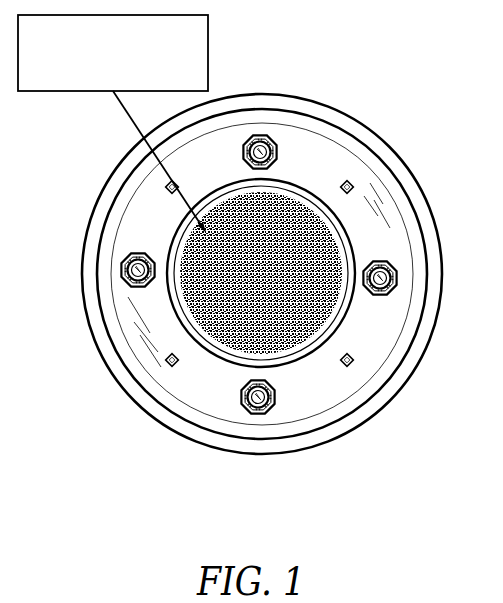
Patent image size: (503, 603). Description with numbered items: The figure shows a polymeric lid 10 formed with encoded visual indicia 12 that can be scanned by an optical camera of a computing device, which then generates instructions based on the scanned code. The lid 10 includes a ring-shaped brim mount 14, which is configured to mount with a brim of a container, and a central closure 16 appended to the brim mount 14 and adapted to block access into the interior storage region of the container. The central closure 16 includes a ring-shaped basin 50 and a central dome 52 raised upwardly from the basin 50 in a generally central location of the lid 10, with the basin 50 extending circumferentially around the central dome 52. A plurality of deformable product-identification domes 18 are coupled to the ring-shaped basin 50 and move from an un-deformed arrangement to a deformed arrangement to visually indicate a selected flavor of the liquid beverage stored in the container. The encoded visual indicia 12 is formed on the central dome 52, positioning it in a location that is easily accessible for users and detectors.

The lid 10 is at (358, 107).
The encoded visual indicia 12 is at (208, 53).
The ring-shaped brim mount 14 is at (331, 435).
The central closure 16 is at (376, 365).
The deformable product-identification domes 18 is at (236, 399).
The ring-shaped basin 50 is at (390, 229).
The central dome 52 is at (298, 189).